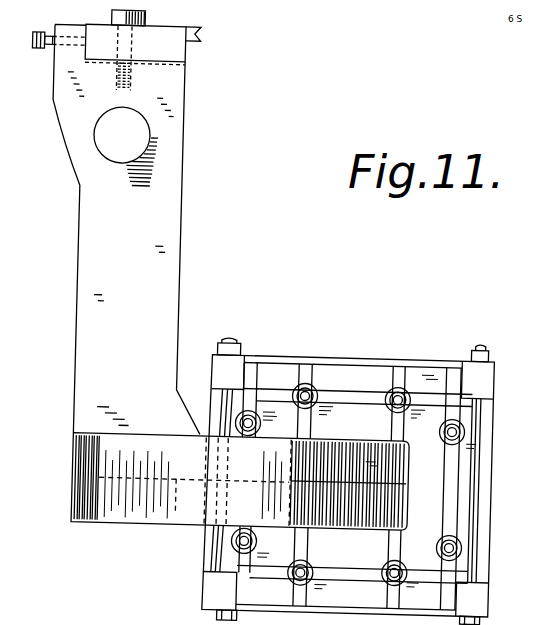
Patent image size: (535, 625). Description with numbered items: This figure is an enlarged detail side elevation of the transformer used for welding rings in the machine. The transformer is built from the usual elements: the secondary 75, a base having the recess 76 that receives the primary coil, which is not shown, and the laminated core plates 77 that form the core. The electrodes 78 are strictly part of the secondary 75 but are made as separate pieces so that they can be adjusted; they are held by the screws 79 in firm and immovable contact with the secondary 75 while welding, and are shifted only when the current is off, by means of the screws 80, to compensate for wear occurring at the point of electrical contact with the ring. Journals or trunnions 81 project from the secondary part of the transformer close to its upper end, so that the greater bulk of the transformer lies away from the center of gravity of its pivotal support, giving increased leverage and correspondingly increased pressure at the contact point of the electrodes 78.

The secondary 75 is at (127, 229).
The recess 76 is at (160, 524).
The laminated core plates 77 is at (495, 503).
The electrodes 78 is at (160, 29).
The screws 79 is at (111, 14).
The screws 80 is at (33, 43).
The journals or trunnions 81 is at (126, 146).